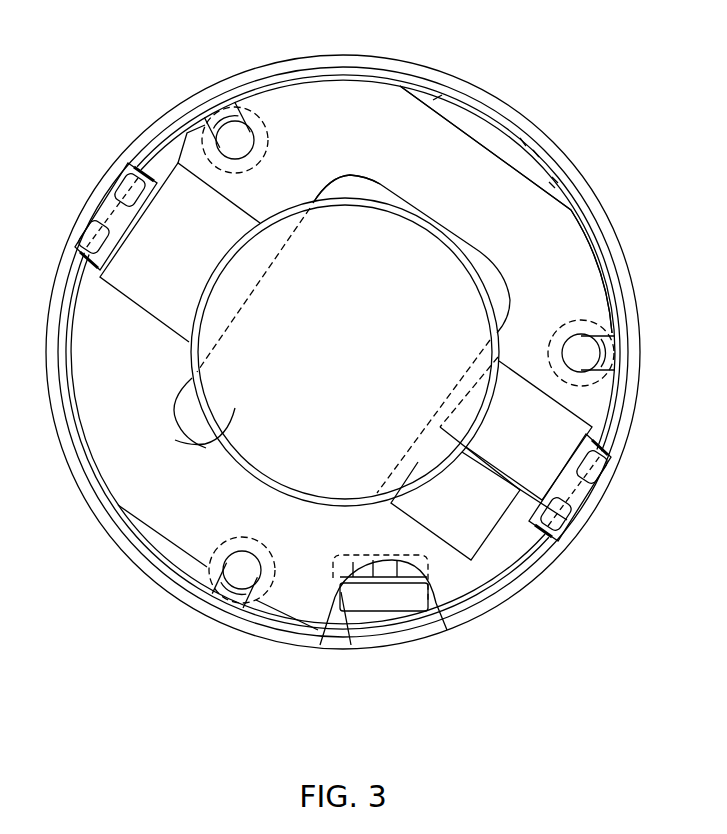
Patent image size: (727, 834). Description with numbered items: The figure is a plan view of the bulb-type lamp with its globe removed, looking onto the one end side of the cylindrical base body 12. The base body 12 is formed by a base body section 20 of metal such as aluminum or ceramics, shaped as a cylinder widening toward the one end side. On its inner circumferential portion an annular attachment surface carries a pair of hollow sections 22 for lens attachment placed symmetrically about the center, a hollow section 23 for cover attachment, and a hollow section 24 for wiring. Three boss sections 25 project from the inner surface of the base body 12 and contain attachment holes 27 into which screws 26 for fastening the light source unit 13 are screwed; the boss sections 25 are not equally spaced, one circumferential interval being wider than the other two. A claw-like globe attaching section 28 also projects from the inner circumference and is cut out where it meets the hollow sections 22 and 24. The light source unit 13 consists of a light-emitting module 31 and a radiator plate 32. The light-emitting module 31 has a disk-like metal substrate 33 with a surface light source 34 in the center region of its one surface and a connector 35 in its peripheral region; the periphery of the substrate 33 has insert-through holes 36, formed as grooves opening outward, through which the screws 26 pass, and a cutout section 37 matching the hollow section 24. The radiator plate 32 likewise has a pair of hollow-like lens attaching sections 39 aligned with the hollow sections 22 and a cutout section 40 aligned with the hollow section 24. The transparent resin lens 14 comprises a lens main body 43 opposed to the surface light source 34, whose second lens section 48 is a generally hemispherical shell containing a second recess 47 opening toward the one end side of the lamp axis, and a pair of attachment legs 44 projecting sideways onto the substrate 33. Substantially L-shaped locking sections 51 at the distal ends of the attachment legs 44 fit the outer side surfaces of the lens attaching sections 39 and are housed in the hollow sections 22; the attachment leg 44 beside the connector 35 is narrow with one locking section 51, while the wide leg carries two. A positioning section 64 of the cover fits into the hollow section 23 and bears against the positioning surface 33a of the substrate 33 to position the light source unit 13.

The base body 12 is at (355, 335).
The light source unit 13 is at (325, 78).
The lens 14 is at (184, 354).
The base body section 20 is at (573, 162).
The hollow sections for lens attachment 22 is at (78, 238).
The hollow section for cover attachment 23 is at (469, 98).
The hollow section for wiring 24 is at (378, 628).
The boss sections 25 is at (609, 348).
The screws 26 is at (577, 320).
The attachment holes 27 is at (609, 360).
The globe attaching section 28 is at (619, 262).
The light-emitting module 31 is at (384, 110).
The radiator plate 32 is at (167, 552).
The substrate 33 is at (441, 188).
The positioning surface 33a is at (483, 137).
The surface light source 34 is at (374, 190).
The connector 35 is at (477, 517).
The insert-through holes 36 is at (561, 353).
The cutout section 37 is at (337, 606).
The lens attaching sections 39 is at (122, 172).
The cutout section 40 is at (349, 640).
The lens main body 43 is at (198, 412).
The attachment legs 44 is at (135, 287).
The second recess 47 is at (198, 440).
The second lens section 48 is at (213, 447).
The locking sections 51 is at (95, 223).
The positioning section 64 is at (507, 140).